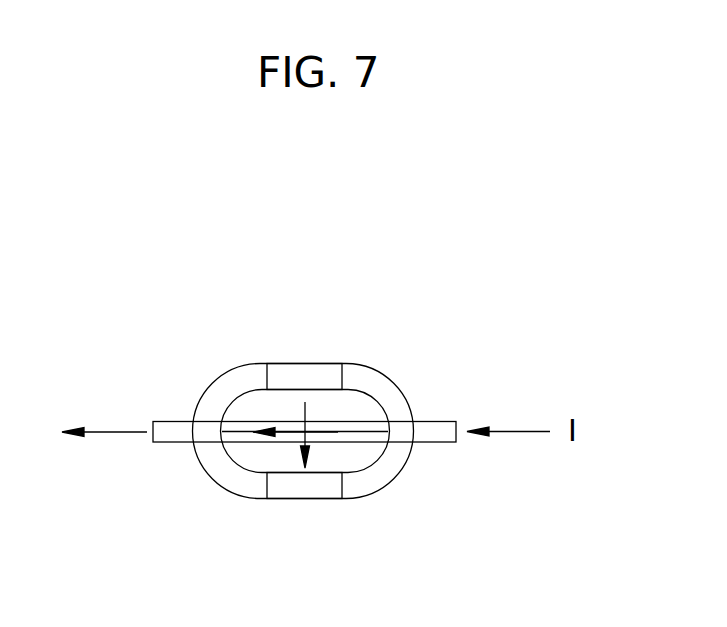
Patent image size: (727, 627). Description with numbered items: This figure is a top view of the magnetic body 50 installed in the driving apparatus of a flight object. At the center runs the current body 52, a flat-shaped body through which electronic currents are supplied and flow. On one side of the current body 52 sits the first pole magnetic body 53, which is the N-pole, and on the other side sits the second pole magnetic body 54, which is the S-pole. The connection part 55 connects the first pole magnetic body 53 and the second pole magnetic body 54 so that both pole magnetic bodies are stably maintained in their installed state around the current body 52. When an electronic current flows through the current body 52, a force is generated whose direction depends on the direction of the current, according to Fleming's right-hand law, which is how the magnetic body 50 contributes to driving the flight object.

The magnetic body 50 is at (332, 202).
The current body 52 is at (437, 428).
The first pole magnetic body 53 is at (337, 370).
The second pole magnetic body 54 is at (325, 490).
The connection part 55 is at (225, 391).